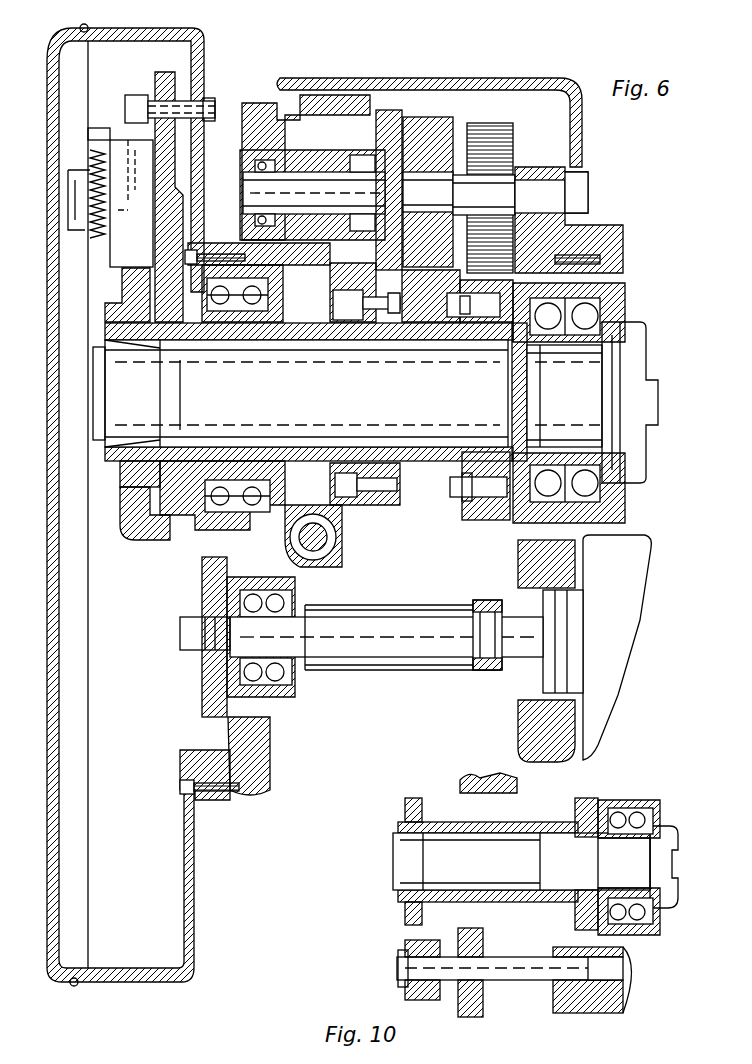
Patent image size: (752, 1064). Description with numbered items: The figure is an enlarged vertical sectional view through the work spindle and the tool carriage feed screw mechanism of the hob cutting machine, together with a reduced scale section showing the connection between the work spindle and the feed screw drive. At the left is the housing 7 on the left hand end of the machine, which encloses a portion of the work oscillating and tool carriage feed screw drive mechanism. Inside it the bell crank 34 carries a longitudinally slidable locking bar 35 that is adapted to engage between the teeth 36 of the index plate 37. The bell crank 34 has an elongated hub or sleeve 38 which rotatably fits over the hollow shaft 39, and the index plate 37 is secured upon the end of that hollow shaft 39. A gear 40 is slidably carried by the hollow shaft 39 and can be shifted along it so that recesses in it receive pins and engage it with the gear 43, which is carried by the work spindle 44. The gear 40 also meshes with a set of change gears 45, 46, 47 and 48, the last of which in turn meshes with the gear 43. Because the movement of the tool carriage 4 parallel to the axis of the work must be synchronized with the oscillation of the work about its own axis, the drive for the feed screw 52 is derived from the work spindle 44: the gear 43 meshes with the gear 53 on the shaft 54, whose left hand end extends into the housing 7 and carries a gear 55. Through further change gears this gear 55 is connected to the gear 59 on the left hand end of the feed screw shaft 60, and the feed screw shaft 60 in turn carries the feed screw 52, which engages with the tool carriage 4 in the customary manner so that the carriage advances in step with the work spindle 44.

In FIG. 6, the housing 7 is at (170, 28).
In FIG. 6, the bell crank 34 is at (165, 85).
In FIG. 6, the locking bar 35 is at (130, 250).
In FIG. 6, the teeth 36 is at (130, 508).
In FIG. 6, the index plate 37 is at (120, 300).
In FIG. 10, the index plate 37 is at (404, 812).
In FIG. 6, the hub 38 is at (270, 315).
In FIG. 6, the hollow shaft 39 is at (130, 475).
In FIG. 10, the hollow shaft 39 is at (494, 817).
In FIG. 6, the gear 40 is at (378, 510).
In FIG. 6, the gear 43 is at (485, 512).
In FIG. 10, the gear 43 is at (585, 798).
In FIG. 6, the work spindle 44 is at (347, 392).
In FIG. 10, the work spindle 44 is at (535, 867).
In FIG. 6, the change gear 45 is at (380, 110).
In FIG. 6, the change gear 46 is at (432, 128).
In FIG. 6, the change gear 47 is at (494, 125).
In FIG. 6, the change gear 48 is at (578, 235).
In FIG. 6, the tool carriage 4 is at (588, 542).
In FIG. 6, the feed screw 52 is at (484, 655).
In FIG. 10, the gear 53 is at (582, 1005).
In FIG. 10, the shaft 54 is at (525, 972).
In FIG. 10, the gear 55 is at (400, 978).
In FIG. 6, the gear 59 is at (212, 680).
In FIG. 6, the feed screw shaft 60 is at (352, 642).